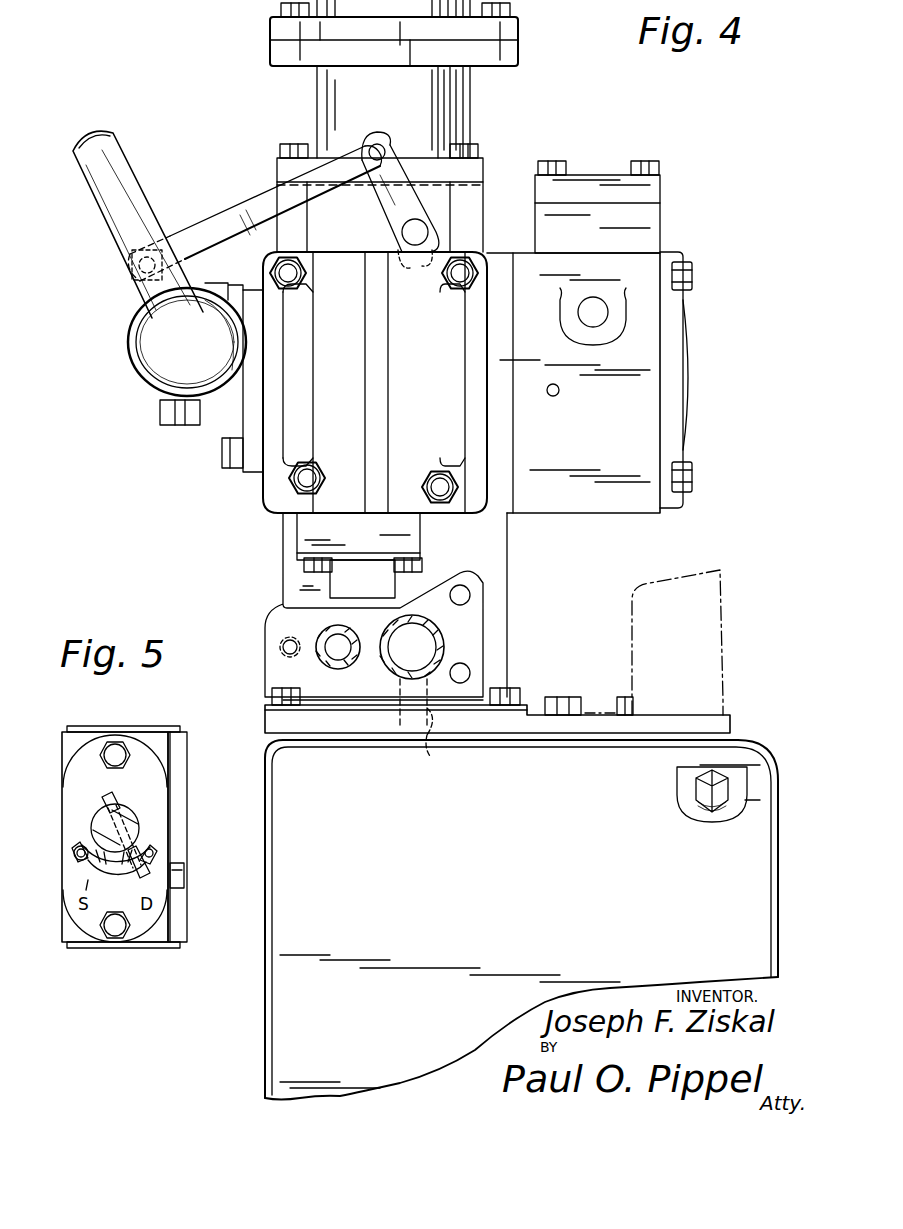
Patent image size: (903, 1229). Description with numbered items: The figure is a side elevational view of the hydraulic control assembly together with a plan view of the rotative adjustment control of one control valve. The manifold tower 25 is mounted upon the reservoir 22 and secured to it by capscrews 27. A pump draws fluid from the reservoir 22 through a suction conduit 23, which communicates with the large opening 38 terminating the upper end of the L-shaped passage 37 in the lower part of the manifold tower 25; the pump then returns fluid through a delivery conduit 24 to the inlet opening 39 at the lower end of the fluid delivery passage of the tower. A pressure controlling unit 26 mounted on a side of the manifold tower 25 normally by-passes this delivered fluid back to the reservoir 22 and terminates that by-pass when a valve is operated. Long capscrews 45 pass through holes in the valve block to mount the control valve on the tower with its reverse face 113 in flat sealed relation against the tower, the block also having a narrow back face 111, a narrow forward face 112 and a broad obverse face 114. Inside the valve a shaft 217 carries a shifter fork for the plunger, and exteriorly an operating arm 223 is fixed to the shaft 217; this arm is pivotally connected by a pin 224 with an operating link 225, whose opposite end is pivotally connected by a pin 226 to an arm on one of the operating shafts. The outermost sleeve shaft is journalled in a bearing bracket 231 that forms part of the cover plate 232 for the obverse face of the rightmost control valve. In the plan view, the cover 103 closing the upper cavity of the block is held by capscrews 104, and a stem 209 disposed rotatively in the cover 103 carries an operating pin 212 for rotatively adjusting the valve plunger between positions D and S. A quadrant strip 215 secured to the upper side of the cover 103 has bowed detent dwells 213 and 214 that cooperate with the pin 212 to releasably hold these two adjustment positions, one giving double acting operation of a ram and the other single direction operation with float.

In FIG. 4, the reservoir 22 is at (278, 1041).
In FIG. 4, the suction conduit 23 is at (394, 678).
In FIG. 4, the delivery conduit 24 is at (318, 668).
In FIG. 4, the manifold tower 25 is at (276, 571).
In FIG. 4, the pressure controlling unit 26 is at (688, 346).
In FIG. 4, the capscrews 27 is at (278, 698).
In FIG. 4, the L-shaped passage 37 is at (438, 741).
In FIG. 4, the large opening 38 is at (440, 632).
In FIG. 4, the inlet opening 39 is at (350, 632).
In FIG. 4, the long capscrews 45 is at (280, 270).
In FIG. 5, the cover 103 is at (155, 779).
In FIG. 5, the capscrews 104 is at (112, 747).
In FIG. 5, the back face 111 is at (138, 726).
In FIG. 5, the forward face 112 is at (145, 949).
In FIG. 5, the reverse face 113 is at (188, 808).
In FIG. 5, the obverse face 114 is at (63, 790).
In FIG. 5, the stem 209 is at (130, 830).
In FIG. 5, the operating pin 212 is at (142, 878).
In FIG. 5, the detent dwell 213 is at (180, 868).
In FIG. 5, the detent dwell 214 is at (95, 862).
In FIG. 5, the quadrant strip 215 is at (80, 855).
In FIG. 4, the shaft 217 is at (416, 247).
In FIG. 4, the operating arm 223 is at (395, 210).
In FIG. 4, the pin 224 is at (380, 140).
In FIG. 4, the operating link 225 is at (250, 205).
In FIG. 4, the pin 226 is at (138, 276).
In FIG. 4, the bearing bracket 231 is at (238, 398).
In FIG. 4, the cover plate 232 is at (356, 383).